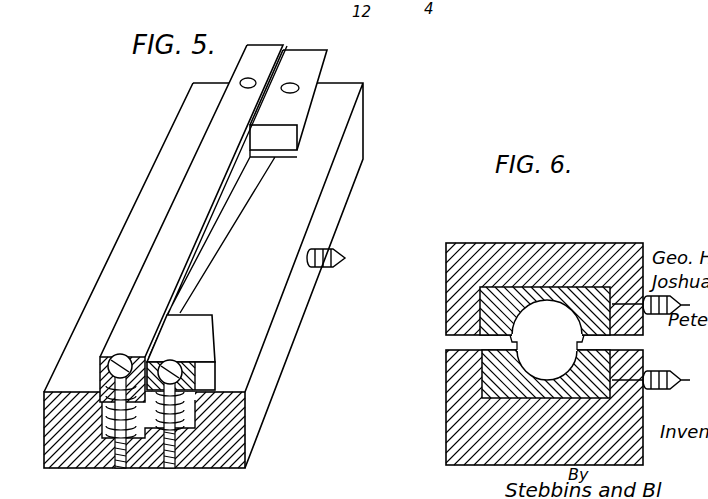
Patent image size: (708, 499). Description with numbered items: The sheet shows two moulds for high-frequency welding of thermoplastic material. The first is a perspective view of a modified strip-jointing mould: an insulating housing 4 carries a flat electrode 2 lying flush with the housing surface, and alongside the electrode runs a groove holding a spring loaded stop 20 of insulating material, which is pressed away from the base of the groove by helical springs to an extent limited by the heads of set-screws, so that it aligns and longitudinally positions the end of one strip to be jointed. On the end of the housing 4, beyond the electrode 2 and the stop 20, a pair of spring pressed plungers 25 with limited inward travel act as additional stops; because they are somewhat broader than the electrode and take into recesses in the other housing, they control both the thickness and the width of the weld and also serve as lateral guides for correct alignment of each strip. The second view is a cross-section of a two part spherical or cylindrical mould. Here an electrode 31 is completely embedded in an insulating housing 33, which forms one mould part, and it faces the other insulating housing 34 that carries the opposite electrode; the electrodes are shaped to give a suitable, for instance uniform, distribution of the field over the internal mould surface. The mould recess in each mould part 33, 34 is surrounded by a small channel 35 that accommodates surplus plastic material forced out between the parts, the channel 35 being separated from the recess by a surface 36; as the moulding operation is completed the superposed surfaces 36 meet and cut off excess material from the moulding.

In FIG. 5, the electrode 2 is at (210, 278).
In FIG. 5, the housing 4 is at (350, 147).
In FIG. 5, the spring loaded stop 20 is at (252, 62).
In FIG. 5, the spring pressed plunger 25 is at (305, 63).
In FIG. 6, the electrode 31 is at (497, 297).
In FIG. 6, the insulating housing 33 is at (632, 245).
In FIG. 6, the insulating housing 34 is at (590, 445).
In FIG. 6, the channel 35 is at (493, 352).
In FIG. 6, the surface 36 is at (517, 333).